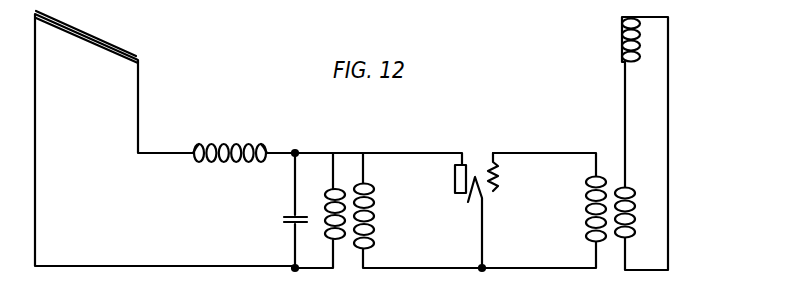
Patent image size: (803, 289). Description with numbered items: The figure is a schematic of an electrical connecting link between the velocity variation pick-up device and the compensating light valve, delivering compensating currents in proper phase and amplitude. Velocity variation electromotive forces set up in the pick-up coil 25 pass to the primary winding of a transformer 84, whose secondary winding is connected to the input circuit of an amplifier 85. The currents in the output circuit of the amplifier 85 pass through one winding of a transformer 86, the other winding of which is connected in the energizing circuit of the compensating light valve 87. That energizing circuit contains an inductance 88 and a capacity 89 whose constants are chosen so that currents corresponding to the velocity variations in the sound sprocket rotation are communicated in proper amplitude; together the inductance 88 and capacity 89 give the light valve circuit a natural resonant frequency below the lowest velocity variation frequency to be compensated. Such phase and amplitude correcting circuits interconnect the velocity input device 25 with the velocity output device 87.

The compensating light valve 87 is at (84, 30).
The inductance 88 is at (241, 143).
The capacity 89 is at (286, 221).
The transformer 86 is at (347, 185).
The amplifier 85 is at (473, 170).
The transformer 84 is at (613, 183).
The pick-up coil 25 is at (620, 42).